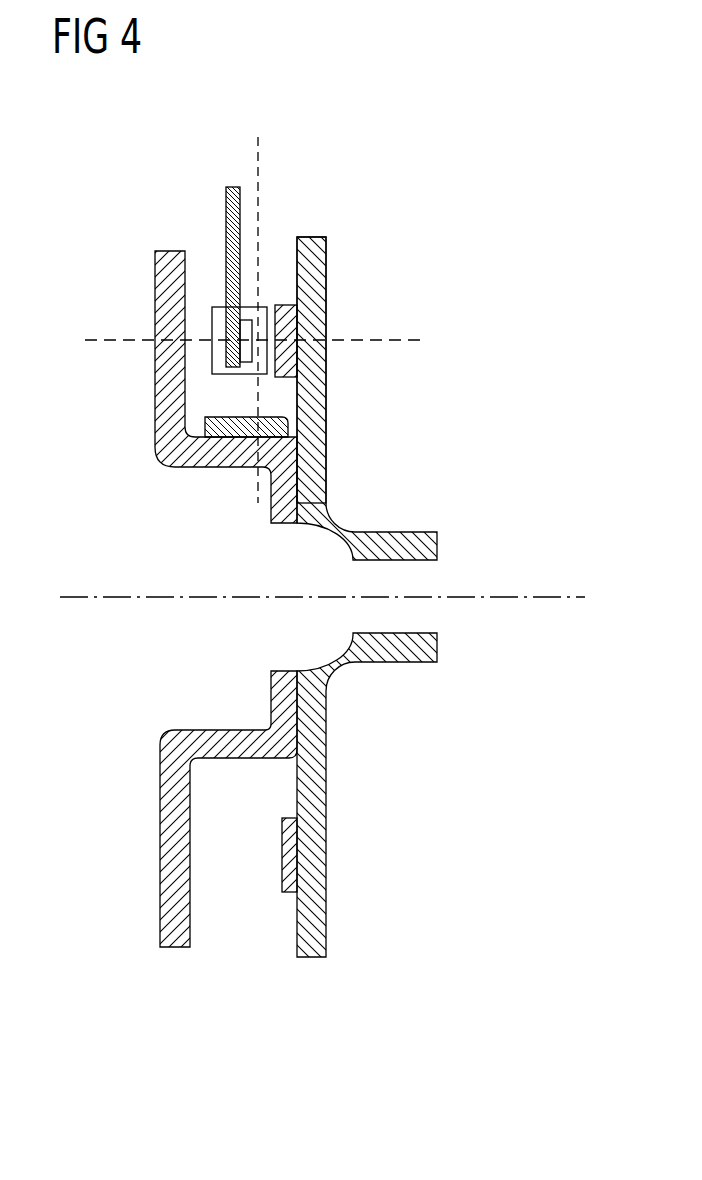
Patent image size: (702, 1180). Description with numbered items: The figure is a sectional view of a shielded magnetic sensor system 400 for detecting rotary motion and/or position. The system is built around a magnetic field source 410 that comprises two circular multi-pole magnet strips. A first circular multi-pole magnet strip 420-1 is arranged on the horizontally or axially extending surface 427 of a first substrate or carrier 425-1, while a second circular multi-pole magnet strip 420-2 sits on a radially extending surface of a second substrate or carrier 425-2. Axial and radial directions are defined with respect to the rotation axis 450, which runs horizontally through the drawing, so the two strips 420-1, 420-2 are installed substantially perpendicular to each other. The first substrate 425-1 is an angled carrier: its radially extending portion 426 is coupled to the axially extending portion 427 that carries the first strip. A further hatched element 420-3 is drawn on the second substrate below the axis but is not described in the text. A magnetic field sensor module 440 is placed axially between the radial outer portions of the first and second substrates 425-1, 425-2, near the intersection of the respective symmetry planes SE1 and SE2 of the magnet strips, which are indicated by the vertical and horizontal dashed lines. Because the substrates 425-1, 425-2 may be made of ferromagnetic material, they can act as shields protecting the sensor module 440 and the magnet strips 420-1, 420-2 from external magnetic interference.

The magnetic sensor system 400 is at (137, 197).
The magnetic field source 410 is at (339, 395).
The first circular multi-pole magnet strip 420-1 is at (310, 428).
The second circular multi-pole magnet strip 420-2 is at (300, 318).
The third bearing element 420-3 is at (289, 855).
The first substrate 425-1 is at (181, 599).
The second substrate 425-2 is at (313, 270).
The radially extending portion 426 is at (167, 383).
The axially extending surface 427 is at (247, 459).
The magnetic field sensor module 440 is at (248, 287).
The rotation axis 450 is at (562, 593).
The symmetry plane SE1 is at (259, 153).
The symmetry plane SE2 is at (105, 338).